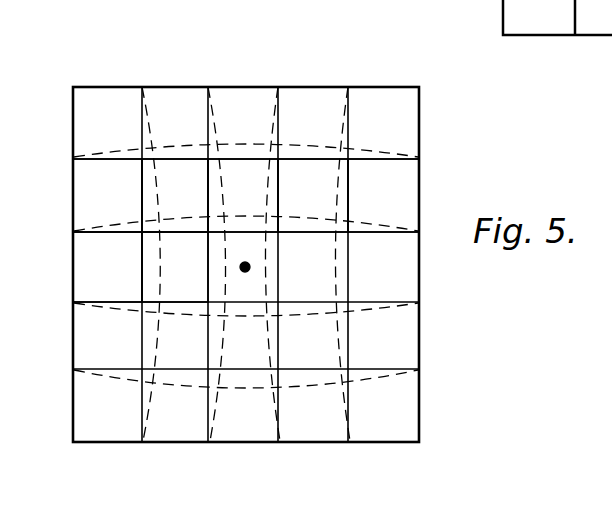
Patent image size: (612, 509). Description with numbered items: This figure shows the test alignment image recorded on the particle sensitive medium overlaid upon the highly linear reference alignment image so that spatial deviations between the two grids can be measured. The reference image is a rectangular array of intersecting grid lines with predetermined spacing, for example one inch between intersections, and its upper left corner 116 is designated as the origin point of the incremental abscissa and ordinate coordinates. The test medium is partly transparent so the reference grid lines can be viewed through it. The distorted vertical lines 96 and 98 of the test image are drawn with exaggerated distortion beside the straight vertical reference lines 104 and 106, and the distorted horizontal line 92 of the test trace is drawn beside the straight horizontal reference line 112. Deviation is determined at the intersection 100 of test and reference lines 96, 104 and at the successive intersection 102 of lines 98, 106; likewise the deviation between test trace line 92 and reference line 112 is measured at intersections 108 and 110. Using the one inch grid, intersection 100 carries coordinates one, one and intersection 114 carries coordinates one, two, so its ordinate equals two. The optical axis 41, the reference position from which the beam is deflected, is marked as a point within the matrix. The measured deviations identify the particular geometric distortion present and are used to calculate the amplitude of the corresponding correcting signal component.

The upper left corner 116 is at (71, 87).
The reference line 104 is at (138, 133).
The vertical line 96 is at (152, 128).
The vertical line 98 is at (214, 143).
The horizontal line 92 is at (312, 142).
The intersection 100 is at (137, 165).
The successive intersection 102 is at (205, 166).
The reference line 112 is at (266, 164).
The intersection 108 is at (283, 163).
The intersection 110 is at (352, 162).
The intersection 114 is at (107, 267).
The reference line 106 is at (208, 243).
The optical axis 41 is at (248, 272).